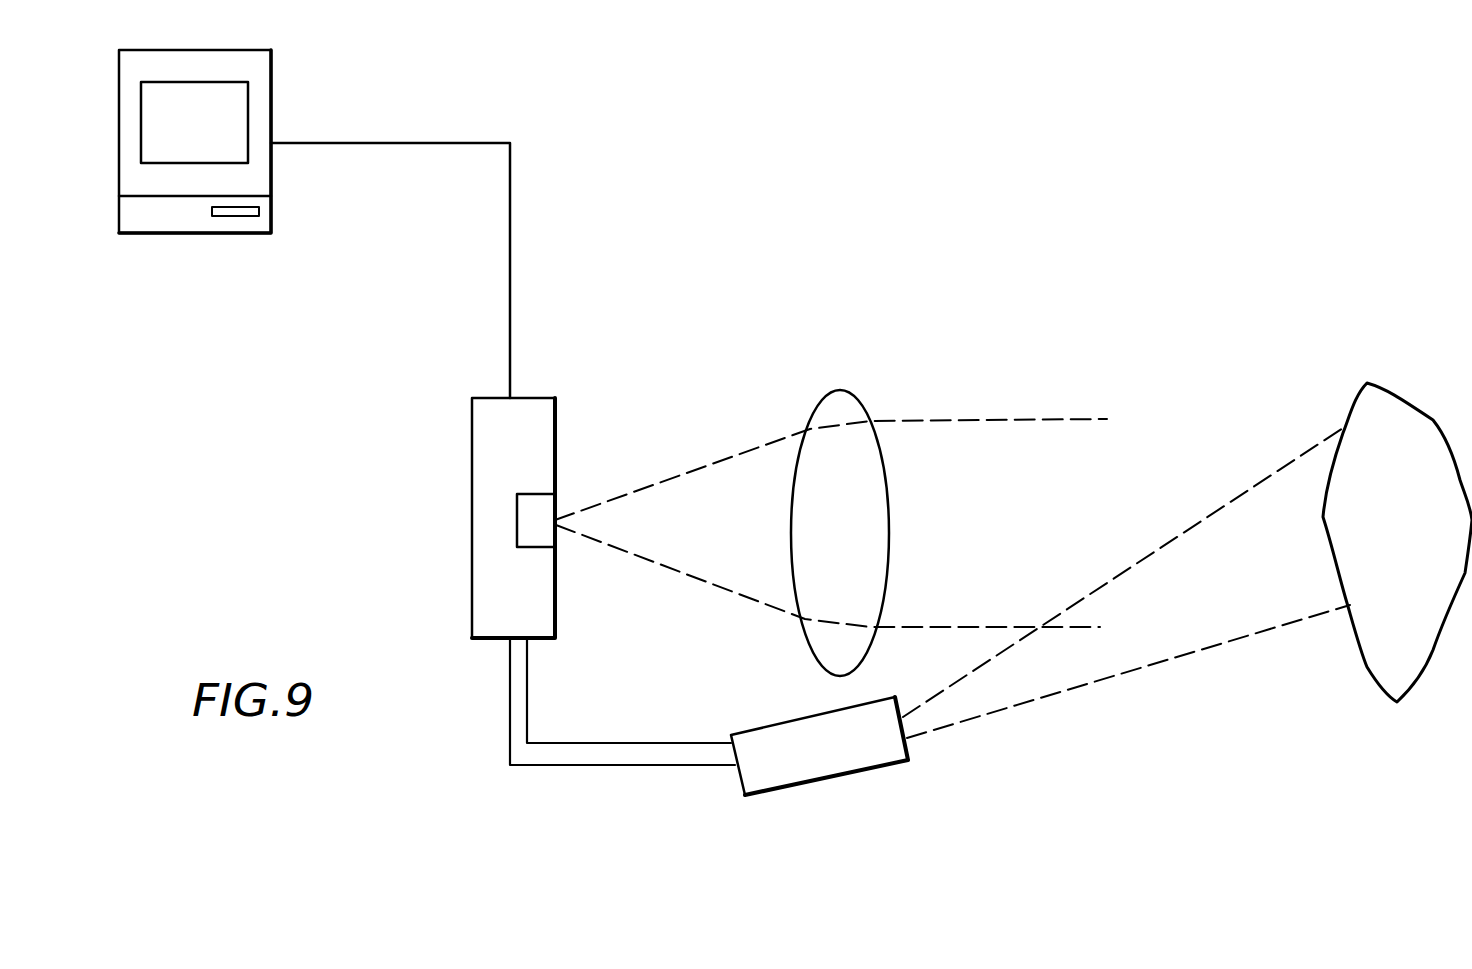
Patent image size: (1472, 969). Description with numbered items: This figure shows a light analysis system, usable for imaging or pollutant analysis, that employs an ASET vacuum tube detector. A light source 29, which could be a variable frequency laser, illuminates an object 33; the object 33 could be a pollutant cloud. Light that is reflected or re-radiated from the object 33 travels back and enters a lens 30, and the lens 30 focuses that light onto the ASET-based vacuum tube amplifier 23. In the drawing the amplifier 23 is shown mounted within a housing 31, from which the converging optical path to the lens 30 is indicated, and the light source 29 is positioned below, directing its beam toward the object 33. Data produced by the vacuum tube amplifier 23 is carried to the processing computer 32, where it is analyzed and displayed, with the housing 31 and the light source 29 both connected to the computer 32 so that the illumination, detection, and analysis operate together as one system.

The ASET-based vacuum tube amplifier 23 is at (543, 535).
The light source 29 is at (777, 770).
The lens 30 is at (830, 392).
The detector housing unit 31 is at (543, 443).
The processing computer 32 is at (272, 97).
The object 33 is at (1358, 382).